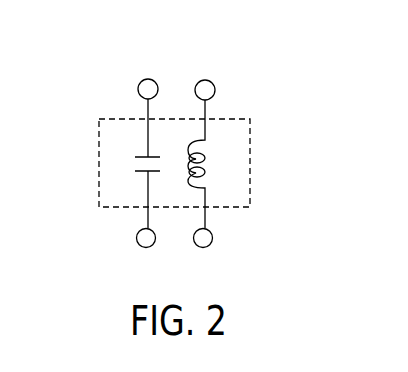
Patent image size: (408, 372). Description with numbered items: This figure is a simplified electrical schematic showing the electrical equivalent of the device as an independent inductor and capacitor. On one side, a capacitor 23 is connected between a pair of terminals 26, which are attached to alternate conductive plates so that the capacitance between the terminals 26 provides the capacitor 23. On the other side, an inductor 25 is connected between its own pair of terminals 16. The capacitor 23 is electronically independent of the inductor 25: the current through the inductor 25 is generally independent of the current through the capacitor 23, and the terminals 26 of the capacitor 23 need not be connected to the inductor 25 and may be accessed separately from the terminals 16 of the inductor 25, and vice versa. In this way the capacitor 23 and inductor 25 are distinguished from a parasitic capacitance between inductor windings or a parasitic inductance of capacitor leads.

The terminals 16 is at (206, 80).
The capacitor 23 is at (143, 172).
The inductor 25 is at (204, 160).
The terminals 26 is at (148, 78).